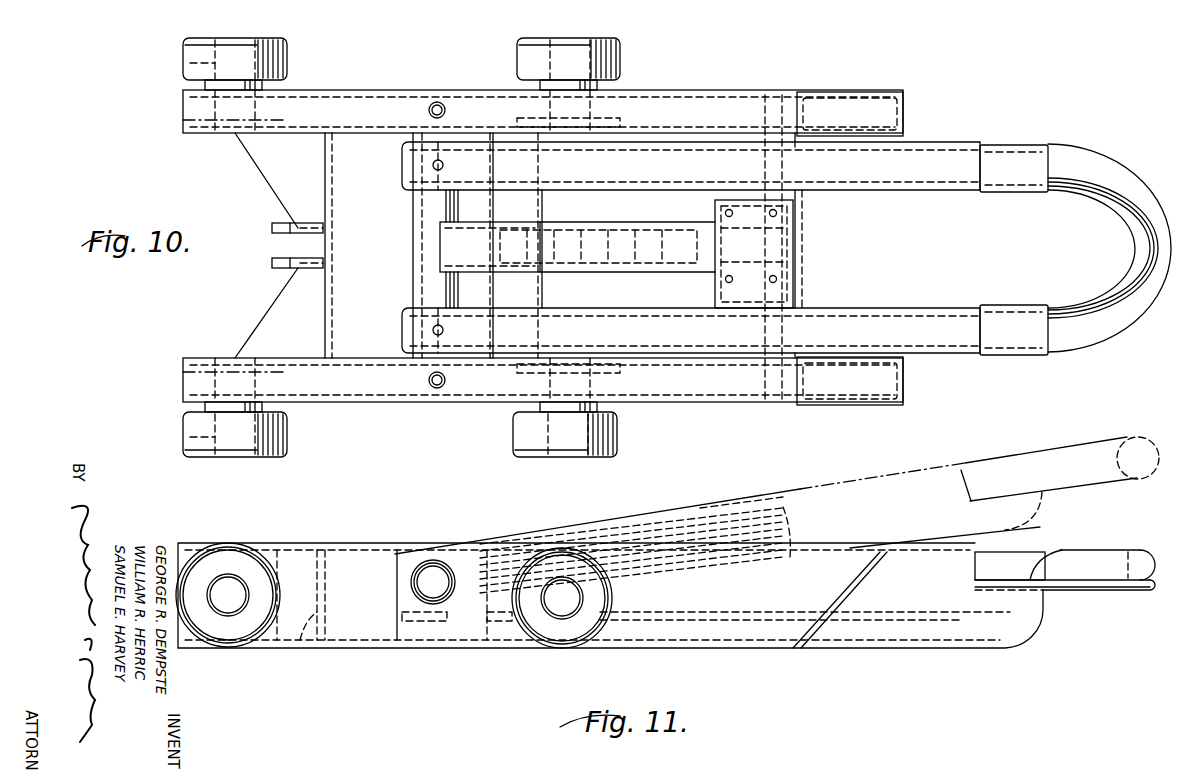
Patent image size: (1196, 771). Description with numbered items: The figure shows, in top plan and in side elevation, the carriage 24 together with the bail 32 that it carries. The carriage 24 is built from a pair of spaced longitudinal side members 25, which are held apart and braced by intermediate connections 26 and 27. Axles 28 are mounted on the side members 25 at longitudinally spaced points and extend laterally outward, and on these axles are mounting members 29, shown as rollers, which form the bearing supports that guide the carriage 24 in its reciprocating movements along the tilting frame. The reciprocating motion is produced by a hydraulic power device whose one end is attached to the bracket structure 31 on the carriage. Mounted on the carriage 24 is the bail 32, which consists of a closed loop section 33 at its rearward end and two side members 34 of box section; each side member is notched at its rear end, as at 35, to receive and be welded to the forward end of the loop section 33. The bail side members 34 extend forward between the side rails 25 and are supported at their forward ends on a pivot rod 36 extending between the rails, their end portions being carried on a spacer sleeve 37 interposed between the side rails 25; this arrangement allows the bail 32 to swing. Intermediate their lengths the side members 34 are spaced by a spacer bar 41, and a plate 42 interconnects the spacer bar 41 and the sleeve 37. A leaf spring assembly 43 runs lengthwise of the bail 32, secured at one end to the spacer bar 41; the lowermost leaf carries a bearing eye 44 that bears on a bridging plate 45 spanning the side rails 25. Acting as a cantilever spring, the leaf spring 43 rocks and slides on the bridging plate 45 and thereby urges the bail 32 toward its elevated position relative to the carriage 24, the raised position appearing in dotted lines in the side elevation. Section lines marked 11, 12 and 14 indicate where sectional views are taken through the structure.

In FIG. 10, the threaded adjusting screw 11 is at (452, 249).
In FIG. 10, the section line 12- 12 is at (450, 283).
In FIG. 11, the section line 14- 14 is at (993, 652).
In FIG. 10, the carriage 24 is at (700, 89).
In FIG. 11, the carriage 24 is at (416, 650).
In FIG. 10, the longitudinal side members 25 is at (373, 98).
In FIG. 11, the longitudinal side members 25 is at (365, 625).
In FIG. 10, the intermediate connection 26 is at (340, 318).
In FIG. 11, the intermediate connection 26 is at (317, 642).
In FIG. 10, the intermediate connection 27 is at (800, 237).
In FIG. 11, the intermediate connection 27 is at (820, 628).
In FIG. 10, the axles 28 is at (190, 63).
In FIG. 11, the axles 28 is at (228, 605).
In FIG. 10, the mounting members 29 is at (196, 75).
In FIG. 10, the bracket structure 31 is at (272, 263).
In FIG. 10, the bail 32 is at (1078, 148).
In FIG. 11, the bail 32 is at (970, 470).
In FIG. 10, the loop section 33 is at (1118, 325).
In FIG. 11, the loop section 33 is at (1095, 591).
In FIG. 10, the side members 34 is at (930, 149).
In FIG. 11, the side members 34 is at (905, 600).
In FIG. 11, the notched portion 35 is at (1035, 578).
In FIG. 11, the pivot rod 36 is at (430, 572).
In FIG. 10, the spacer sleeve 37 is at (413, 228).
In FIG. 10, the spacer bar 41 is at (705, 297).
In FIG. 11, the spacer bar 41 is at (757, 510).
In FIG. 10, the plate 42 is at (622, 268).
In FIG. 11, the plate 42 is at (630, 520).
In FIG. 10, the leaf spring assembly 43 is at (615, 230).
In FIG. 11, the leaf spring assembly 43 is at (706, 565).
In FIG. 11, the bearing eye 44 is at (485, 548).
In FIG. 10, the bridging plate 45 is at (523, 296).
In FIG. 11, the bridging plate 45 is at (478, 640).